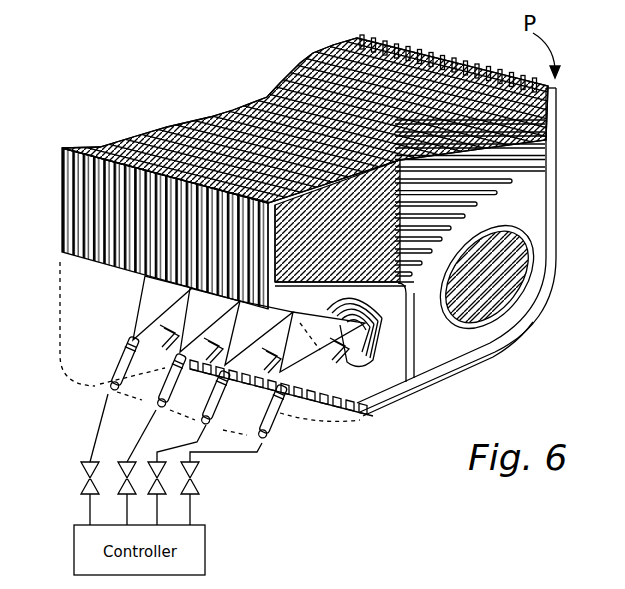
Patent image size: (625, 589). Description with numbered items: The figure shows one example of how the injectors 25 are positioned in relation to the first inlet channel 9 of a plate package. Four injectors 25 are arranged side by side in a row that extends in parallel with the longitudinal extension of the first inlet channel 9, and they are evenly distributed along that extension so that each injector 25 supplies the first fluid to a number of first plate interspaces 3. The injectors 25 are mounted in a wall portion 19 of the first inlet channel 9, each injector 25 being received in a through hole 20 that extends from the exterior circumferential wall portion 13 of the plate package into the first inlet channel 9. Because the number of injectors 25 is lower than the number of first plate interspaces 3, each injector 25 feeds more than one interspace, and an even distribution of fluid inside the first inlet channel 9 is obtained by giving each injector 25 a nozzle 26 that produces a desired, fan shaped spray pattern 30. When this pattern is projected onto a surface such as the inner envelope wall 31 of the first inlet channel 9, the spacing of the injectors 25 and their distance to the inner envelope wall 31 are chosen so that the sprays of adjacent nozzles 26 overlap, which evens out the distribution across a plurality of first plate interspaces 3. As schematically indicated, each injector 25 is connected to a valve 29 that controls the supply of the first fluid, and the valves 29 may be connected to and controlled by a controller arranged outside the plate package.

The first plate interspaces 3 is at (372, 412).
The first inlet channel 9 is at (425, 388).
The exterior circumferential wall portion 13 is at (90, 218).
The wall portion 19 is at (355, 415).
The through hole 20 is at (115, 367).
The injector 25 is at (110, 388).
The nozzle 26 is at (131, 336).
The valve 29 is at (85, 487).
The fan shaped spray pattern 30 is at (380, 340).
The inner envelope wall 31 is at (380, 313).